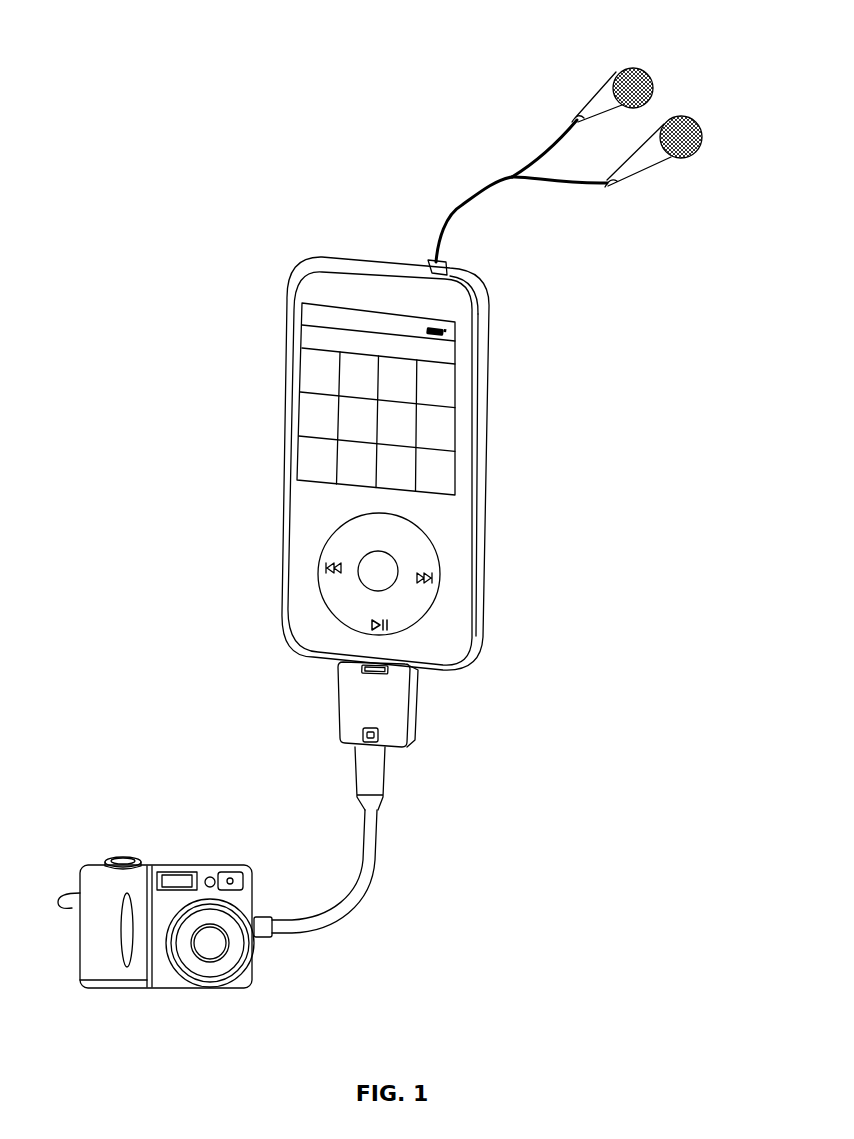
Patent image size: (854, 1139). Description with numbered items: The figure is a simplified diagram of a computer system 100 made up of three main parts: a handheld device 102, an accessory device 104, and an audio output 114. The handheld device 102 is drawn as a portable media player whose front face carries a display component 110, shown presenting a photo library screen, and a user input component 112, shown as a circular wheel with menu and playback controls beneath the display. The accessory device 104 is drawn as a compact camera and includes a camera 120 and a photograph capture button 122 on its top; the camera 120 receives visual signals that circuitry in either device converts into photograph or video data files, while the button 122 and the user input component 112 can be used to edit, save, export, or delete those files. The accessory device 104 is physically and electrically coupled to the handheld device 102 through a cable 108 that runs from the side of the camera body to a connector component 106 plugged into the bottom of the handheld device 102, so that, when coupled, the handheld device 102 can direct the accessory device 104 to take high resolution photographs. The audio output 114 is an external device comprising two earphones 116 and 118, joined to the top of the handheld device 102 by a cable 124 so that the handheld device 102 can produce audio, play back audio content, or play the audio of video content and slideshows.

The computer system 100 is at (146, 40).
The handheld device 102 is at (297, 348).
The accessory device 104 is at (165, 927).
The connector component 106 is at (398, 712).
The cable 108 is at (347, 898).
The display component 110 is at (440, 473).
The user input component 112 is at (425, 597).
The audio output 114 is at (510, 180).
The earphone 116 is at (610, 80).
The earphone 118 is at (677, 157).
The camera 120 is at (167, 980).
The photograph capture button 122 is at (127, 862).
The cable 124 is at (460, 213).